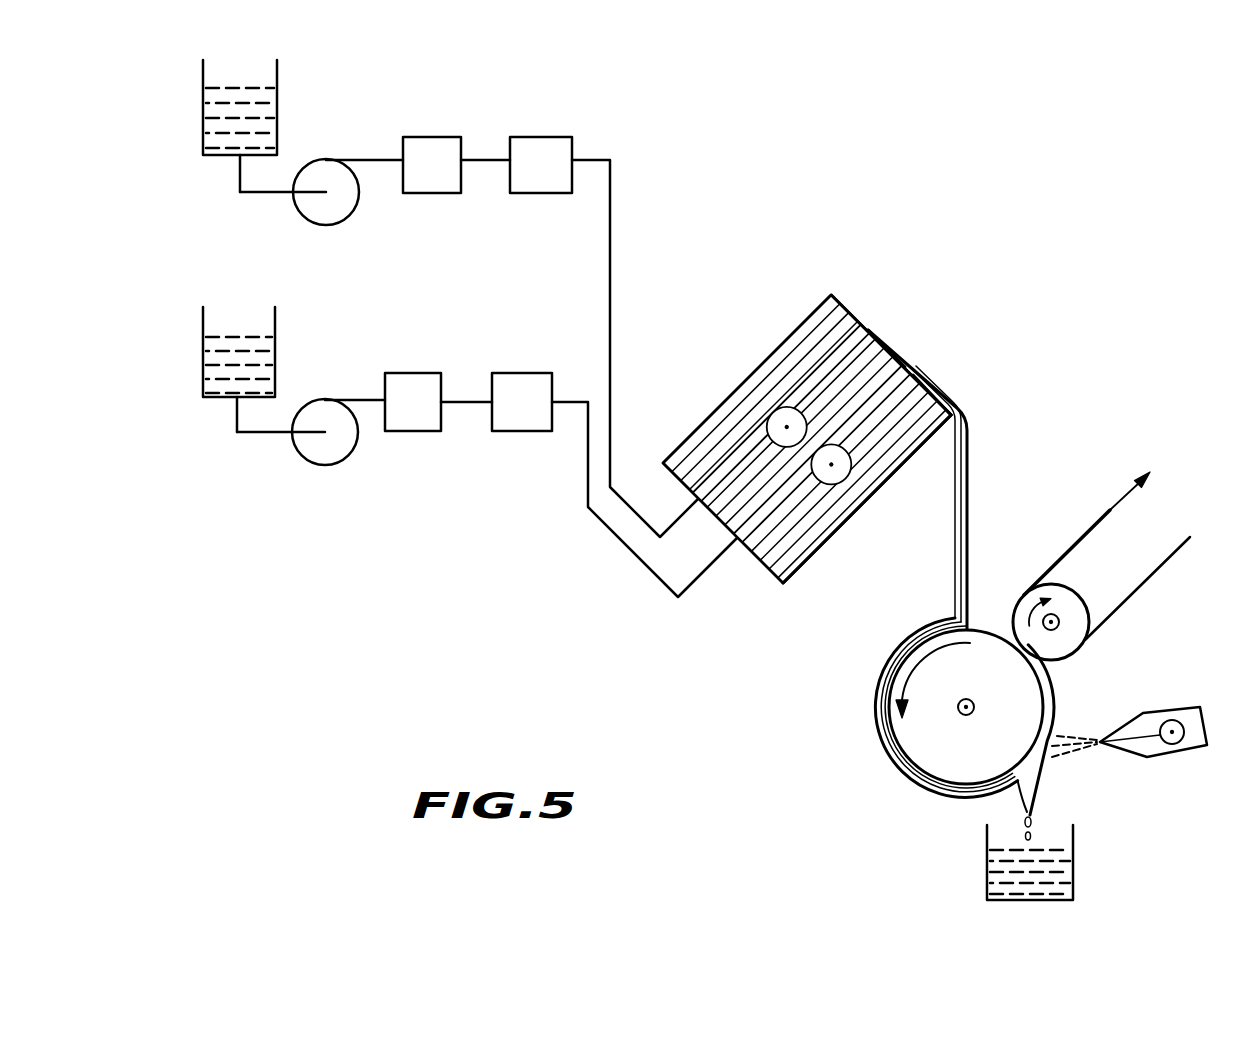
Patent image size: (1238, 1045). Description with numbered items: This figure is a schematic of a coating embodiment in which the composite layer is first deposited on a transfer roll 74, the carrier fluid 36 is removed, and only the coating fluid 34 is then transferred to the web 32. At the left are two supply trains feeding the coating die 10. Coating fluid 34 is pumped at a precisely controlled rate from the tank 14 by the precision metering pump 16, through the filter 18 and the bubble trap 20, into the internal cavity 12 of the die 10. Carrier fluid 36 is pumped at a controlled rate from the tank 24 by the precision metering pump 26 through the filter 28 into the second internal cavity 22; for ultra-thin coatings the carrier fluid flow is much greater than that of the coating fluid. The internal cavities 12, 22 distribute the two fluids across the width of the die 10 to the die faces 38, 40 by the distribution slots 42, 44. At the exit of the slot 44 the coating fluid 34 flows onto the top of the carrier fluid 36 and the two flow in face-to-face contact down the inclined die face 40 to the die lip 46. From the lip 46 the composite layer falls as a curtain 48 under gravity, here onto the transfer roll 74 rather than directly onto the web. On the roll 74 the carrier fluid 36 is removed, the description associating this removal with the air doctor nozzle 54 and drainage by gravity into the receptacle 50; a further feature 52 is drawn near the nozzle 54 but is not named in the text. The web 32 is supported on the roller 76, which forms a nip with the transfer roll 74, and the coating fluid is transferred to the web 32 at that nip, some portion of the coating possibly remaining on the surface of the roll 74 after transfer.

The coating die 10 is at (756, 570).
The internal cavity 12 is at (770, 387).
The tank 14 is at (279, 106).
The precision metering pump 16 is at (337, 218).
The filter 18 is at (428, 145).
The bubble trap 20 is at (545, 143).
The internal cavity 22 is at (837, 483).
The tank 24 is at (277, 333).
The precision metering pump 26 is at (330, 467).
The filter 28 is at (412, 378).
The continuous web 32 is at (1150, 575).
The coating fluid 34 is at (243, 90).
The carrier fluid 36 is at (237, 337).
The die face 38 is at (885, 350).
The inclined die face 40 is at (930, 393).
The distribution slot 42 is at (828, 368).
The distribution slot 44 is at (847, 437).
The die lip 46 is at (940, 433).
The curtain 48 is at (970, 473).
The receptacle 50 is at (1073, 867).
The air stream 52 is at (1085, 752).
The air doctor nozzle 54 is at (1180, 757).
The transfer roll 74 is at (1023, 703).
The roller 76 is at (1073, 607).